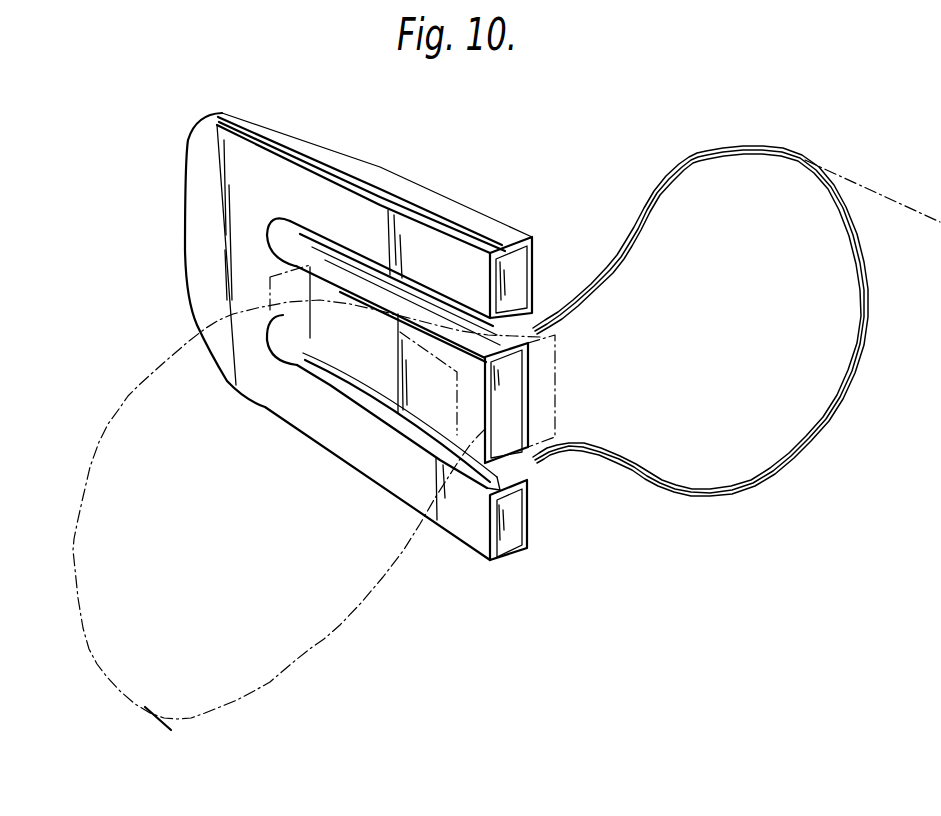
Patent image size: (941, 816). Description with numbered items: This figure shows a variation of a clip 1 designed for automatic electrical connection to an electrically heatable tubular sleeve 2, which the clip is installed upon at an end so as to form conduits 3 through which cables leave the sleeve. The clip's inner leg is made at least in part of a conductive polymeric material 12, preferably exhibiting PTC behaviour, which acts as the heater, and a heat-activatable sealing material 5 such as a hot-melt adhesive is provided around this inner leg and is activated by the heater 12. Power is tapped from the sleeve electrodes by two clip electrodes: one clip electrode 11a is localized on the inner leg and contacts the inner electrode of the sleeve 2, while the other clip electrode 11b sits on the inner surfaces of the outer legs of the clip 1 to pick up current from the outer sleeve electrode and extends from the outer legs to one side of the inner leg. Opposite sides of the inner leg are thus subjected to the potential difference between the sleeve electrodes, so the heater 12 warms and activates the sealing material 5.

The clip 1 is at (193, 160).
The tubular sleeve 2 is at (224, 707).
The conduits 3 is at (747, 435).
The sealing material 5 is at (548, 334).
The clip electrode 11a is at (437, 460).
The clip electrode 11b is at (538, 252).
The conductive polymeric material heater 12 is at (510, 401).